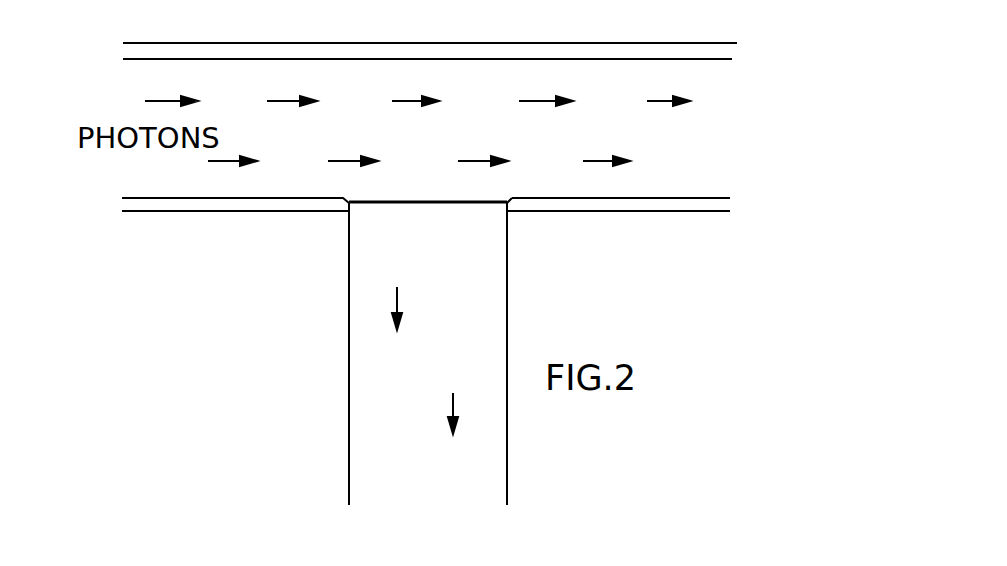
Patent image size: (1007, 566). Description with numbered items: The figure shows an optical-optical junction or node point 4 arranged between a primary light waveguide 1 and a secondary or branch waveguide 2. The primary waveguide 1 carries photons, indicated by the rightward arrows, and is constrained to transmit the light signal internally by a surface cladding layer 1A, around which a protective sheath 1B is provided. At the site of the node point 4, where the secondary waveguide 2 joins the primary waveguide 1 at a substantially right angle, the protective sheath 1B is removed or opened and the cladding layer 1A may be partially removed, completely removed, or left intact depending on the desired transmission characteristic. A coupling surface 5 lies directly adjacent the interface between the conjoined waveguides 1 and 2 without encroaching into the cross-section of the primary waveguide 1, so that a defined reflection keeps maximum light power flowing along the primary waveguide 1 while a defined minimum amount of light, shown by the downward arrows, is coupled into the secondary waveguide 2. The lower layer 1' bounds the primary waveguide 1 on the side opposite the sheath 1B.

The primary light waveguide 1 is at (457, 49).
The surface cladding layer 1A is at (732, 59).
The protective sheath 1B is at (730, 43).
The lower layer 1' is at (426, 227).
The secondary waveguide 2 is at (357, 377).
The node point 4 is at (287, 243).
The coupling surface 5 is at (467, 203).